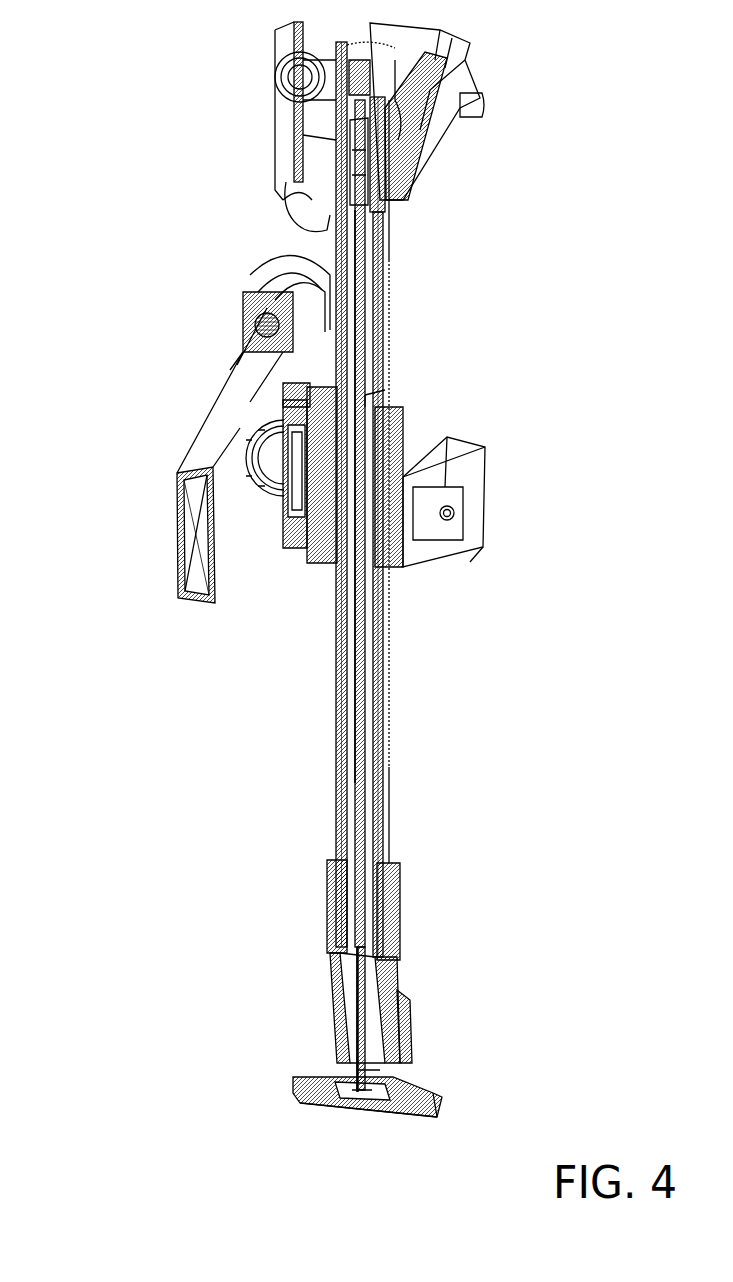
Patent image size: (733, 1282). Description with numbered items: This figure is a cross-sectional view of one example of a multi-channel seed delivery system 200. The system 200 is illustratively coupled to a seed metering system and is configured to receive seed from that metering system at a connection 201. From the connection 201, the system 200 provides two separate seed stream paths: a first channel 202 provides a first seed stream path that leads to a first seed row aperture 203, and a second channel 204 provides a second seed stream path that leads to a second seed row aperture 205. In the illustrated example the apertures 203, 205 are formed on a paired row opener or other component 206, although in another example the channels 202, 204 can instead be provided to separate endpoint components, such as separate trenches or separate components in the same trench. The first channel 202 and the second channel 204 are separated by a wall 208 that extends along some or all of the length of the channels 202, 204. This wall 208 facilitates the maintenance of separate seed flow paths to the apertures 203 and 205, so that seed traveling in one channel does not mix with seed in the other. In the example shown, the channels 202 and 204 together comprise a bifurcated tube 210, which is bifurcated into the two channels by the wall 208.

The multi-channel seed delivery system 200 is at (128, 83).
The connection 201 is at (373, 170).
The first channel 202 is at (357, 85).
The first seed row aperture 203 is at (340, 1087).
The second channel 204 is at (373, 73).
The second seed row aperture 205 is at (380, 1095).
The paired row opener 206 is at (402, 1050).
The wall 208 is at (357, 690).
The bifurcated tube 210 is at (382, 362).